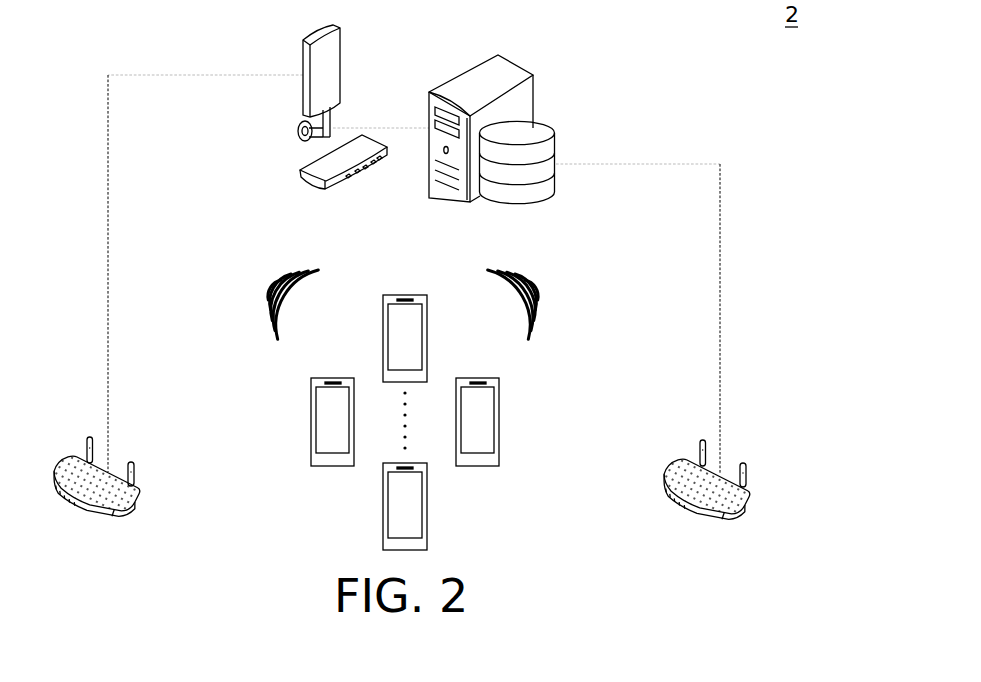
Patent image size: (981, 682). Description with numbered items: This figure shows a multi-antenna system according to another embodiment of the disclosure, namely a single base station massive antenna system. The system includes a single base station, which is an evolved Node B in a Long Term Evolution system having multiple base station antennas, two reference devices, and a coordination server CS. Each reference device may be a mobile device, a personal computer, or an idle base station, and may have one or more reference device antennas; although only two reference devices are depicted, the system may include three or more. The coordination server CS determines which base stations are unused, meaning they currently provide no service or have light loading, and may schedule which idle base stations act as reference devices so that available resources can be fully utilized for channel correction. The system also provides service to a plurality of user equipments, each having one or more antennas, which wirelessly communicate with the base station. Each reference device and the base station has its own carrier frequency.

The coordination server CS is at (462, 72).